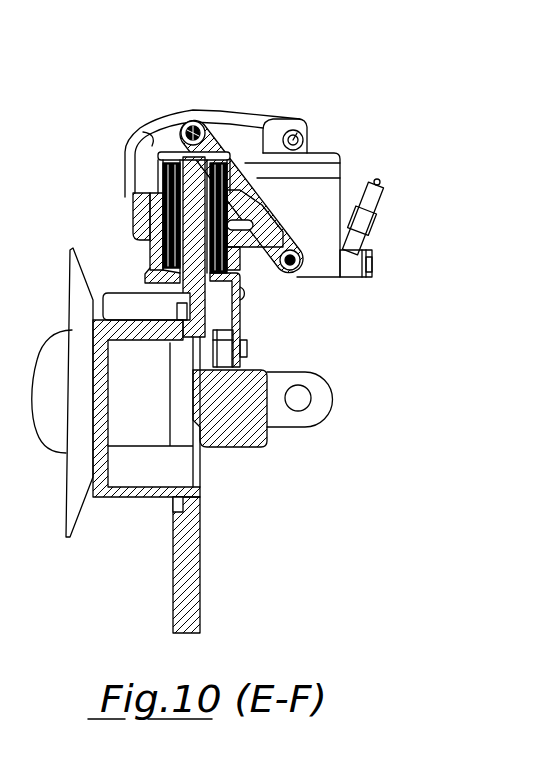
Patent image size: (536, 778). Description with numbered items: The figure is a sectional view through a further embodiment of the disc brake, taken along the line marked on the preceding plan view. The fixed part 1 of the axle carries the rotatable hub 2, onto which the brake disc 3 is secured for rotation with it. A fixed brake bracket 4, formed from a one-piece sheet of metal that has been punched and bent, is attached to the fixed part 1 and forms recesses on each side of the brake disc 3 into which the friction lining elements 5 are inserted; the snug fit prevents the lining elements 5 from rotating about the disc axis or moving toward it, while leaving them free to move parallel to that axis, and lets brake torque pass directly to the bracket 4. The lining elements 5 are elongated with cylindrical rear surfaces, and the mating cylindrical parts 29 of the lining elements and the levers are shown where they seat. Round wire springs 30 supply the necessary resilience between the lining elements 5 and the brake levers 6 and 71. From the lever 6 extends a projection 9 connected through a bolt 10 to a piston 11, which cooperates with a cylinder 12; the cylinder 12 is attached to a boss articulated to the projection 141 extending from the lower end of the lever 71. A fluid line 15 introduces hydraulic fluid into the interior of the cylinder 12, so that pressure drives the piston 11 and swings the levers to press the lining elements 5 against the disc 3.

The fixed part of the axis 1 is at (230, 422).
The rotatable hub 2 is at (123, 413).
The brake disc 3 is at (178, 588).
The fixed brake bracket 4 is at (243, 325).
The friction lining elements 5 is at (133, 197).
The brake lever 6 is at (131, 137).
The projection 9 is at (254, 138).
The bolt 10 is at (296, 137).
The piston 11 is at (254, 170).
The cylinder 12 is at (313, 213).
The fluid line 15 is at (370, 206).
The mating cylindrical parts 29 is at (133, 233).
The round wire springs 30 is at (285, 215).
The brake lever 71 is at (265, 200).
The projection 141 is at (270, 262).